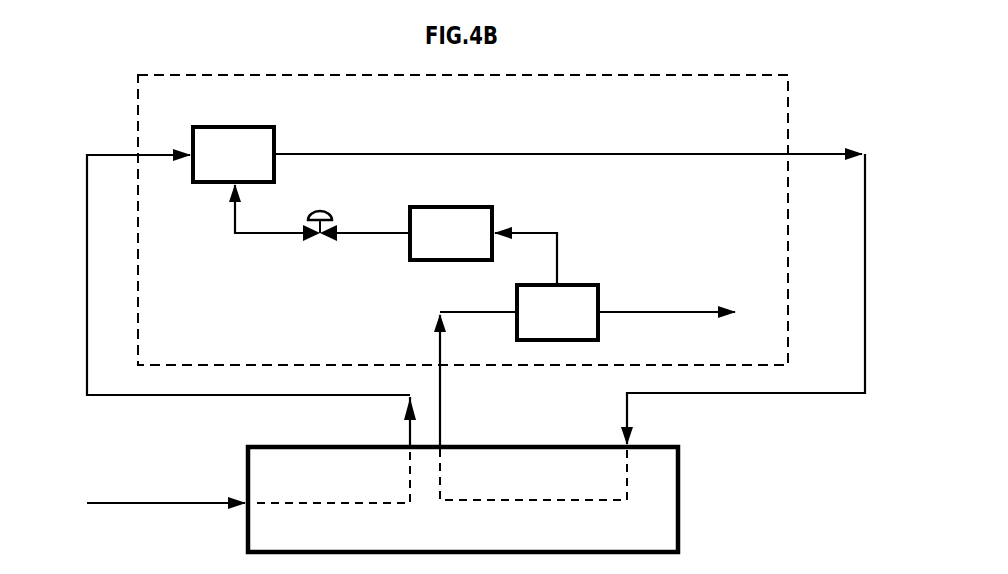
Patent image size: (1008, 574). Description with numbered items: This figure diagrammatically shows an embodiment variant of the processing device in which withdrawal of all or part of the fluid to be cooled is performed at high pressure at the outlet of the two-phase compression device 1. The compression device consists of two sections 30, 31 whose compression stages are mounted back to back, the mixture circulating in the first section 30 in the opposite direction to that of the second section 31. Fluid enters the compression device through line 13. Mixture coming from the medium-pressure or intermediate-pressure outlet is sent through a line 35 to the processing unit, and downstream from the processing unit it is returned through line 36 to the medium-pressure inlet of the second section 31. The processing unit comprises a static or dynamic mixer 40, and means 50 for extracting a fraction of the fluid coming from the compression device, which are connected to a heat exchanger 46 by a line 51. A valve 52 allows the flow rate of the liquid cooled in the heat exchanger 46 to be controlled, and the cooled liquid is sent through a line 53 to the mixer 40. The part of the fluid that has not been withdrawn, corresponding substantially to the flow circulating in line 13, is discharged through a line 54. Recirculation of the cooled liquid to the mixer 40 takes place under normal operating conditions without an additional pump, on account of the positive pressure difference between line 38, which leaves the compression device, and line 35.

The reactor 1 is at (694, 555).
The line 13 is at (177, 500).
The first section of the two-phase compression device 30 is at (352, 498).
The second section of the two-phase compression device 31 is at (570, 498).
The line 35 is at (182, 397).
The line 36 is at (822, 395).
The line 38 is at (476, 392).
The static or dynamic mixer 40 is at (233, 154).
The heat exchanger 46 is at (451, 233).
The means for extracting a fraction of the fluid 50 is at (557, 312).
The line 51 is at (582, 216).
The valve 52 is at (326, 243).
The line 53 is at (245, 238).
The line 54 is at (682, 310).